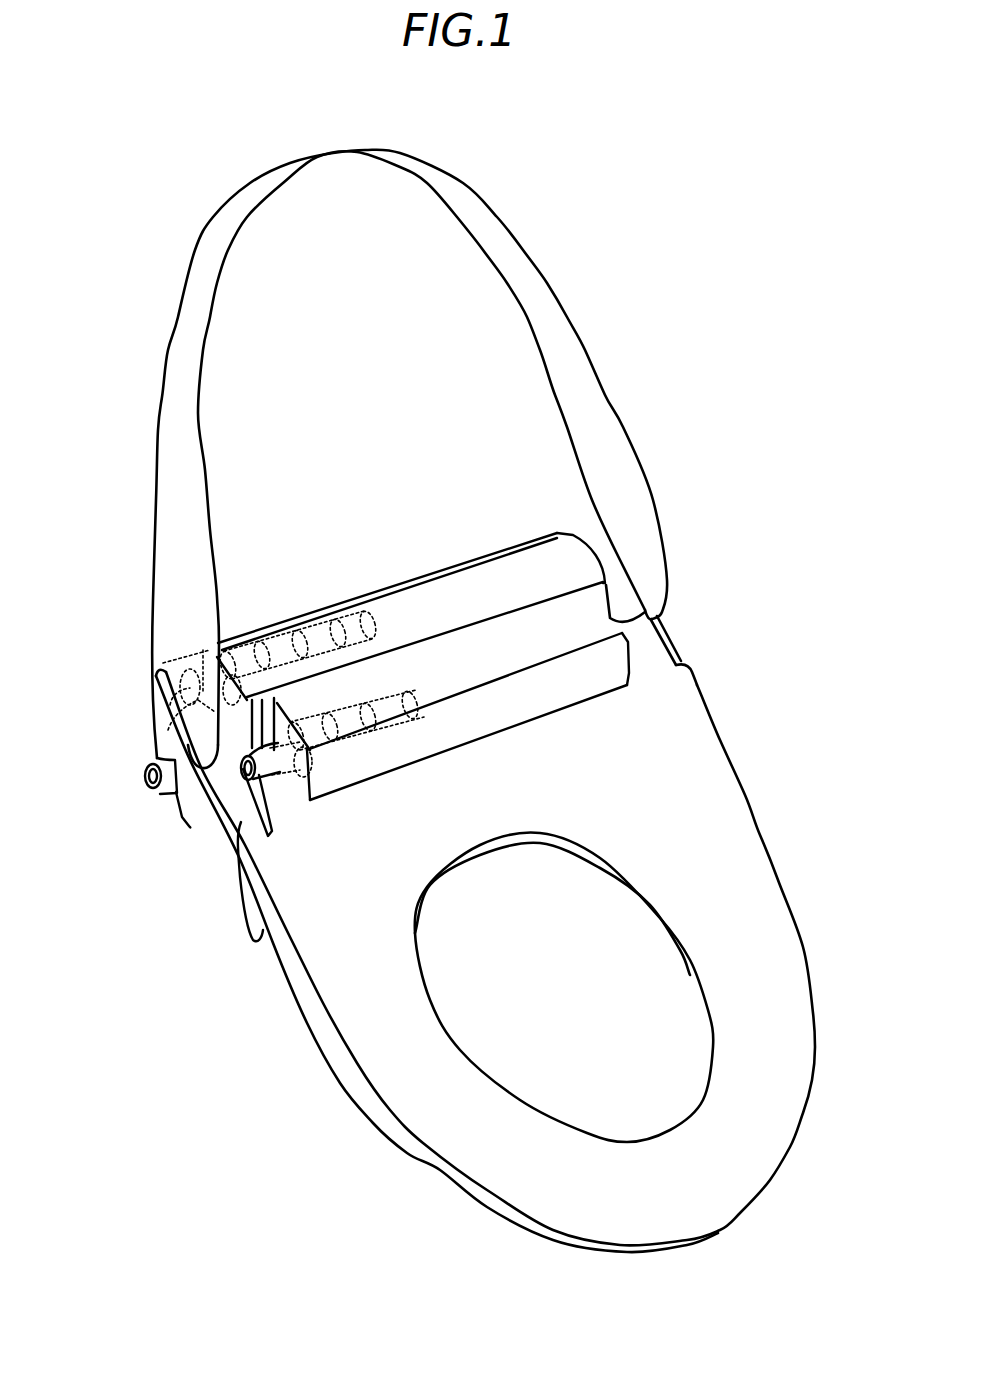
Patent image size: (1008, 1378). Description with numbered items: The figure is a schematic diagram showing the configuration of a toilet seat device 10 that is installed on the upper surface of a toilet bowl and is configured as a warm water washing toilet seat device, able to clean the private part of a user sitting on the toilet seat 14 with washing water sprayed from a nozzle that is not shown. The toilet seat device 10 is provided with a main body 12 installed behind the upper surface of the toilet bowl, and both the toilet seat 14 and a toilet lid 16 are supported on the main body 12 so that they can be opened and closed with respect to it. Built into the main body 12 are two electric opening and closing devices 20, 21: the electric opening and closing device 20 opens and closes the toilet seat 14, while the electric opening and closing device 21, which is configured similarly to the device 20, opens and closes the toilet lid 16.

The toilet seat device 10 is at (546, 180).
The main body 12 is at (190, 827).
The toilet seat 14 is at (747, 800).
The toilet lid 16 is at (170, 335).
The electric opening and closing device 20 is at (322, 785).
The electric opening and closing device 21 is at (246, 630).